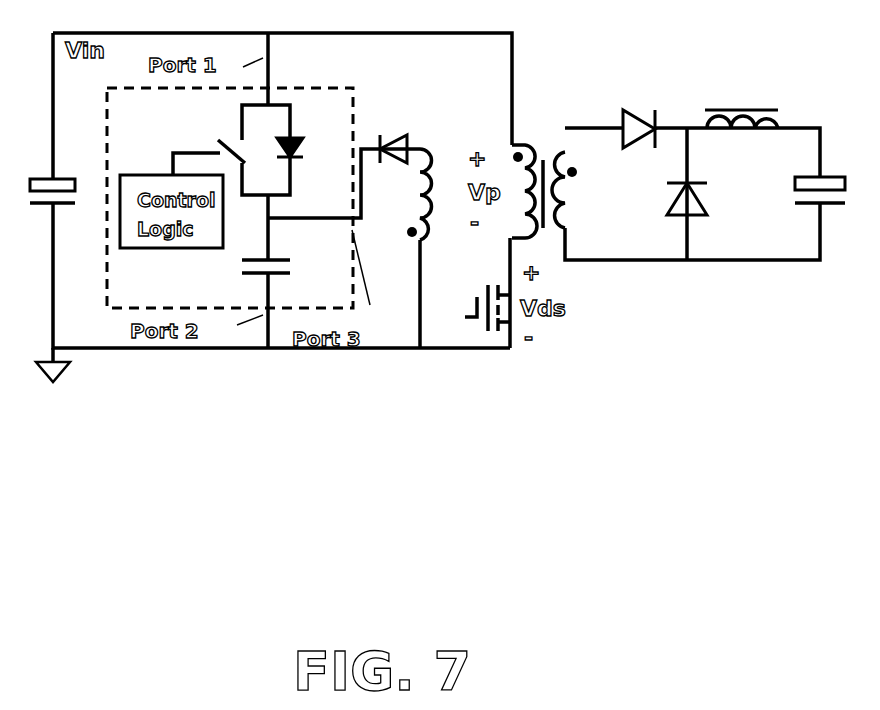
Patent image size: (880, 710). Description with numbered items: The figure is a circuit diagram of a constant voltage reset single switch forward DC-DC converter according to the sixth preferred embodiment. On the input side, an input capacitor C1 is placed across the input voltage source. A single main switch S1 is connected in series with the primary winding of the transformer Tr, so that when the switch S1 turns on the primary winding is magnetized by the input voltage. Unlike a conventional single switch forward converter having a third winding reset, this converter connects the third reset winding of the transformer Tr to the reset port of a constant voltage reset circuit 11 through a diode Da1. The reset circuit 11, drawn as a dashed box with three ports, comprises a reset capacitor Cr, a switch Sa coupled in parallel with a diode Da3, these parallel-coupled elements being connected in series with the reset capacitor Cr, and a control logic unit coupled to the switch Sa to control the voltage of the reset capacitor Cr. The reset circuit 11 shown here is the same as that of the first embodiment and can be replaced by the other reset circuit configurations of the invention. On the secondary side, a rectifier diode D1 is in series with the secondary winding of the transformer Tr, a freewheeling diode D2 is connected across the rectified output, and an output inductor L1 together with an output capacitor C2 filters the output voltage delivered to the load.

The constant voltage reset circuit 11 is at (308, 83).
The input capacitor C1 is at (38, 211).
The switch Sa is at (209, 146).
The diode Da3 is at (292, 150).
The diode Da1 is at (382, 134).
The reset capacitor Cr is at (237, 270).
The transformer Tr is at (492, 171).
The switch S1 is at (467, 308).
The rectifier diode D1 is at (630, 110).
The freewheeling diode D2 is at (656, 199).
The output inductor L1 is at (741, 104).
The output capacitor C2 is at (824, 209).